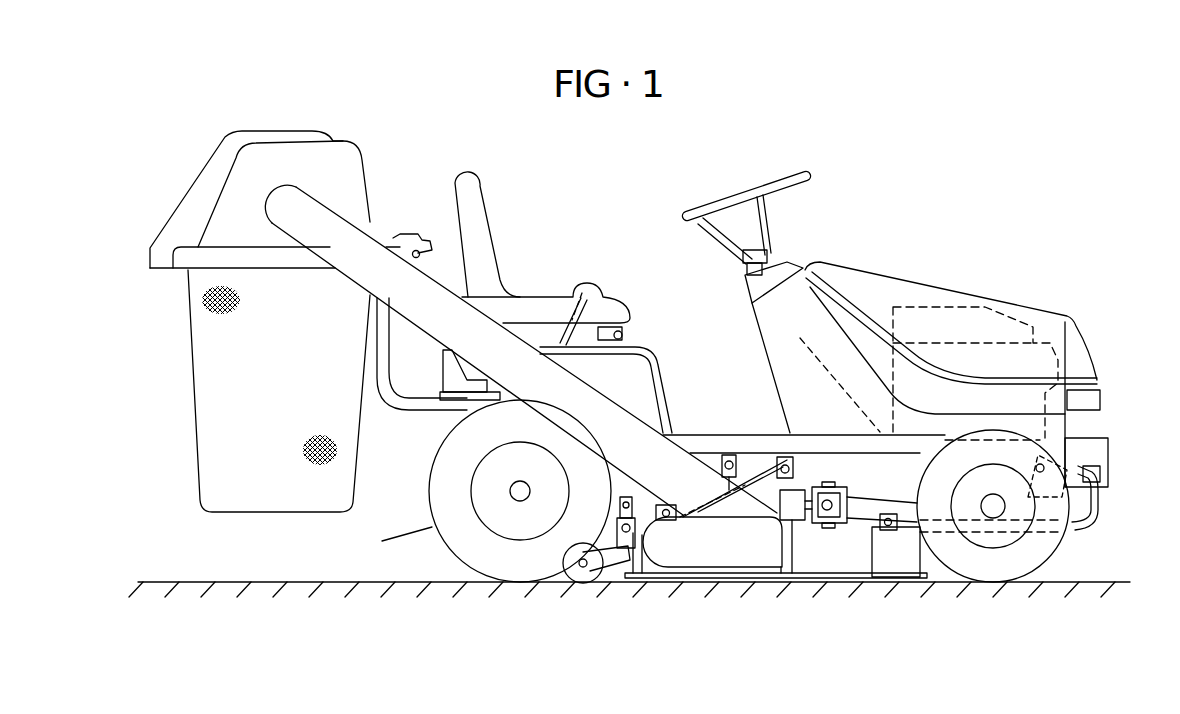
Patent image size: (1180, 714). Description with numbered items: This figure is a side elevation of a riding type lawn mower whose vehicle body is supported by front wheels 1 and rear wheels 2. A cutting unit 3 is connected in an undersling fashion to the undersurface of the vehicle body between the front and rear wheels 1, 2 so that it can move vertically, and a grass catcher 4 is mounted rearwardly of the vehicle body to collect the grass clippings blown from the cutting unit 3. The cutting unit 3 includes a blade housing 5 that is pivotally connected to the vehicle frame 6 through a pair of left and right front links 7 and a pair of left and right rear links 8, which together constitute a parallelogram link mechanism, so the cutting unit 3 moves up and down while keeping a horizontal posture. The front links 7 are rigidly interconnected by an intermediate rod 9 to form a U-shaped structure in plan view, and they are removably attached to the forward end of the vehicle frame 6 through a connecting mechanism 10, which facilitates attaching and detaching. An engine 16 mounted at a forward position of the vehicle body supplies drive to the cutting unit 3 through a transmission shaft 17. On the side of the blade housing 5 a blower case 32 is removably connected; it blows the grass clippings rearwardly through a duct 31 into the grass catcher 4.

The front wheels 1 is at (1043, 553).
The rear wheels 2 is at (430, 530).
The cutting unit 3 is at (925, 563).
The grass catcher 4 is at (200, 378).
The blade housing 5 is at (885, 560).
The vehicle frame 6 is at (718, 440).
The front links 7 is at (1093, 518).
The rear links 8 is at (760, 458).
The intermediate rod 9 is at (1093, 500).
The connecting mechanism 10 is at (1080, 458).
The engine 16 is at (985, 305).
The transmission shaft 17 is at (882, 497).
The duct 31 is at (628, 410).
The blower case 32 is at (778, 566).